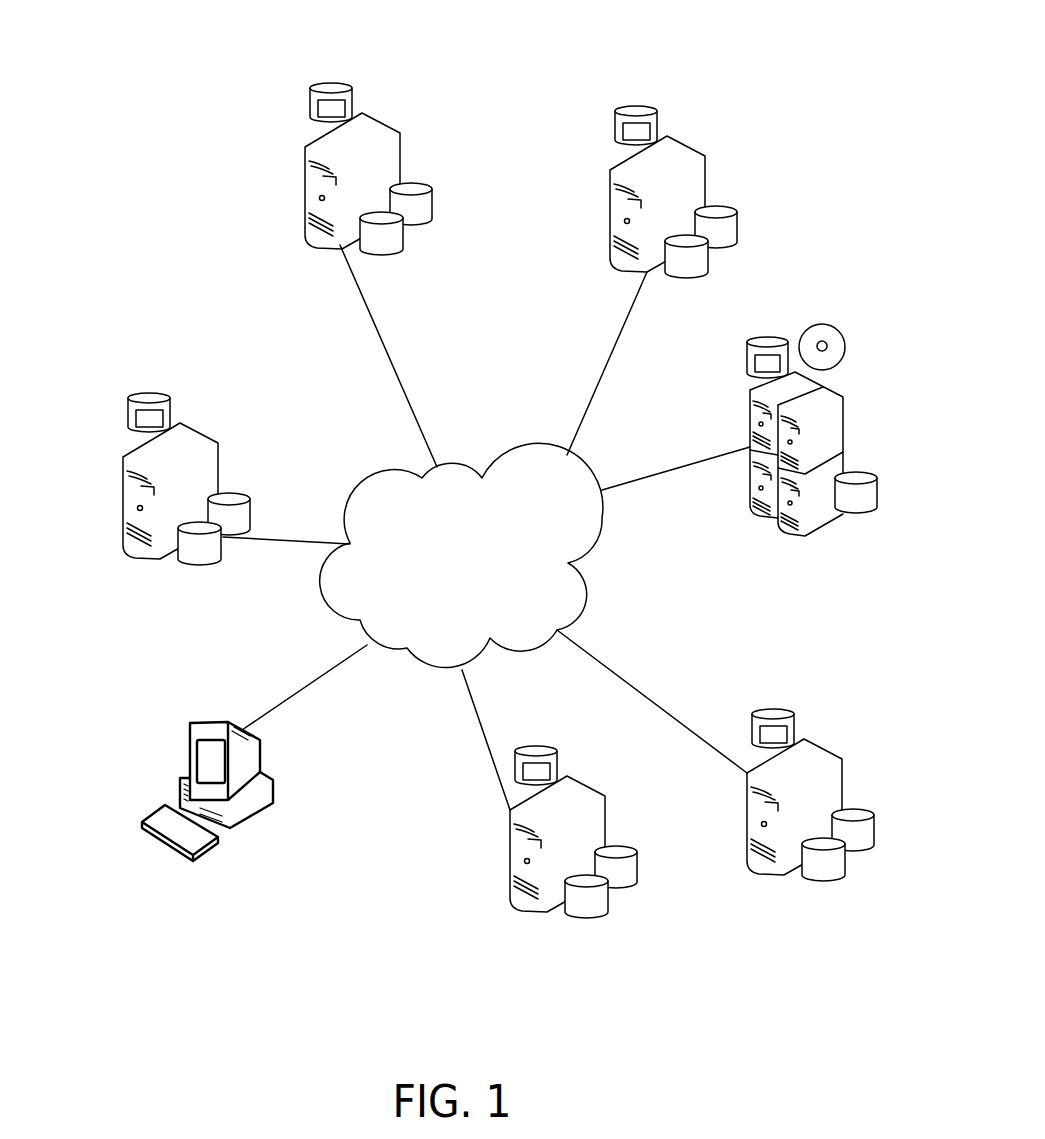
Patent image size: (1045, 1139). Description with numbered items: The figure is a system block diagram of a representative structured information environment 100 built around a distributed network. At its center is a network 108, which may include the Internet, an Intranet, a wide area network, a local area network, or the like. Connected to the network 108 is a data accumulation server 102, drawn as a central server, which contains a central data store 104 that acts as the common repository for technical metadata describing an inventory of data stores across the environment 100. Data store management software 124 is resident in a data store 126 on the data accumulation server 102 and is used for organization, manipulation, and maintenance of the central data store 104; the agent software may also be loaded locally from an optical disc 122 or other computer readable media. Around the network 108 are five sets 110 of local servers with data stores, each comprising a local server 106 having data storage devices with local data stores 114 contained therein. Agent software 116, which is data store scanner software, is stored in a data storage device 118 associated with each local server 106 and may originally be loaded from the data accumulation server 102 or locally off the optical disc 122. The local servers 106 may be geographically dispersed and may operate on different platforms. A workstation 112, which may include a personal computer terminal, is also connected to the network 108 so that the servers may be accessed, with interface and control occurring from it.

The structured information environment 100 is at (756, 58).
The data accumulation server 102 is at (841, 393).
The central data store 104 is at (865, 512).
The local server 106 is at (374, 175).
The network 108 is at (380, 473).
The sets of local servers with data stores 110 is at (475, 518).
The workstation 112 is at (202, 880).
The local data store 114 is at (417, 232).
The agent software 116 is at (300, 100).
The data storage device 118 is at (303, 91).
The optical disc 122 is at (840, 329).
The data store management software 124 is at (755, 364).
The data store 126 is at (756, 338).